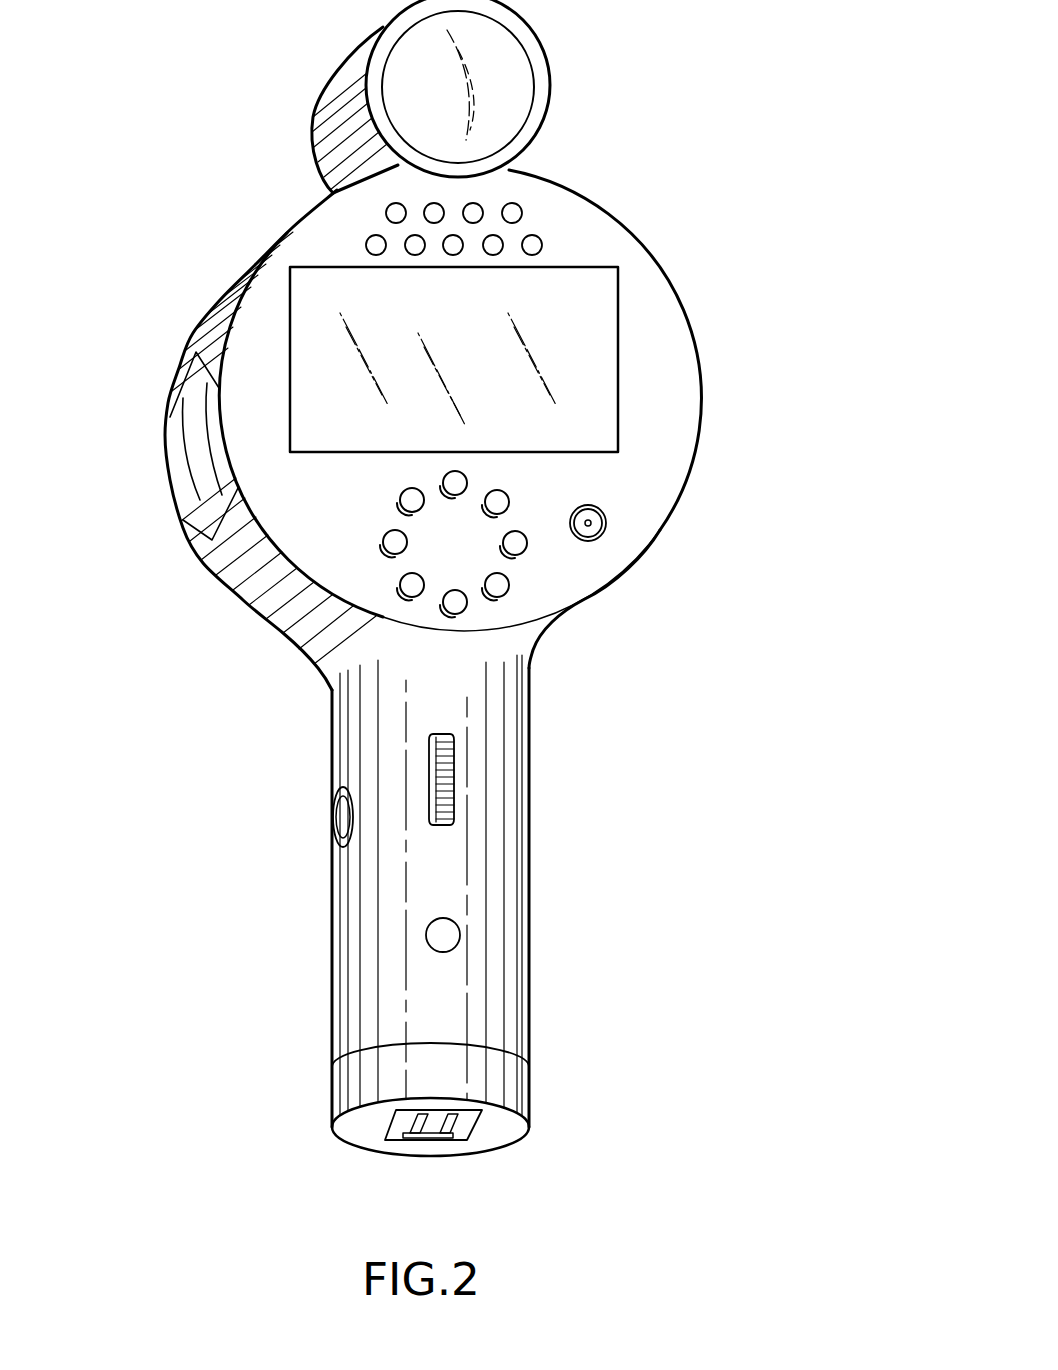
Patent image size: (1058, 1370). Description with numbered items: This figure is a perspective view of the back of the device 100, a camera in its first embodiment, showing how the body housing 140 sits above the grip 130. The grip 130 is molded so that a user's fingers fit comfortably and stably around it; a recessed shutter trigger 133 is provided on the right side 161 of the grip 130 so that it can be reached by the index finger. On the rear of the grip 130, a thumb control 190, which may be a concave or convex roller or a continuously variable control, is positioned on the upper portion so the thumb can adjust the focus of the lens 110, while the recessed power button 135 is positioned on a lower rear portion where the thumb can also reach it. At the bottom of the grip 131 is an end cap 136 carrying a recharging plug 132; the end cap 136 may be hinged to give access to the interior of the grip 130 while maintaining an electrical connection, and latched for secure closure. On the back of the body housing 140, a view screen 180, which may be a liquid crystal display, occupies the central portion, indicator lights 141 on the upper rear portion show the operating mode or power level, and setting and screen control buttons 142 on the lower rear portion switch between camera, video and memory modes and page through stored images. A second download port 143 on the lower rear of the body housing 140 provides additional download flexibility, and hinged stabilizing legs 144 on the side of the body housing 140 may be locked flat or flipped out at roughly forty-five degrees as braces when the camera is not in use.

The device 100 is at (733, 447).
The lens 110 is at (500, 65).
The grip 130 is at (596, 841).
The bottom of the grip 131 is at (507, 1123).
The recharging plug 132 is at (427, 1133).
The recessed shutter trigger 133 is at (340, 817).
The recessed power button 135 is at (455, 934).
The end cap 136 is at (510, 1080).
The body housing 140 is at (630, 265).
The indicator lights 141 is at (515, 210).
The setting and screen control buttons 142 is at (393, 533).
The second download port 143 is at (595, 527).
The hinged stabilizing legs 144 is at (205, 497).
The right side of the grip 161 is at (340, 747).
The view screen 180 is at (505, 381).
The thumb control 190 is at (457, 780).